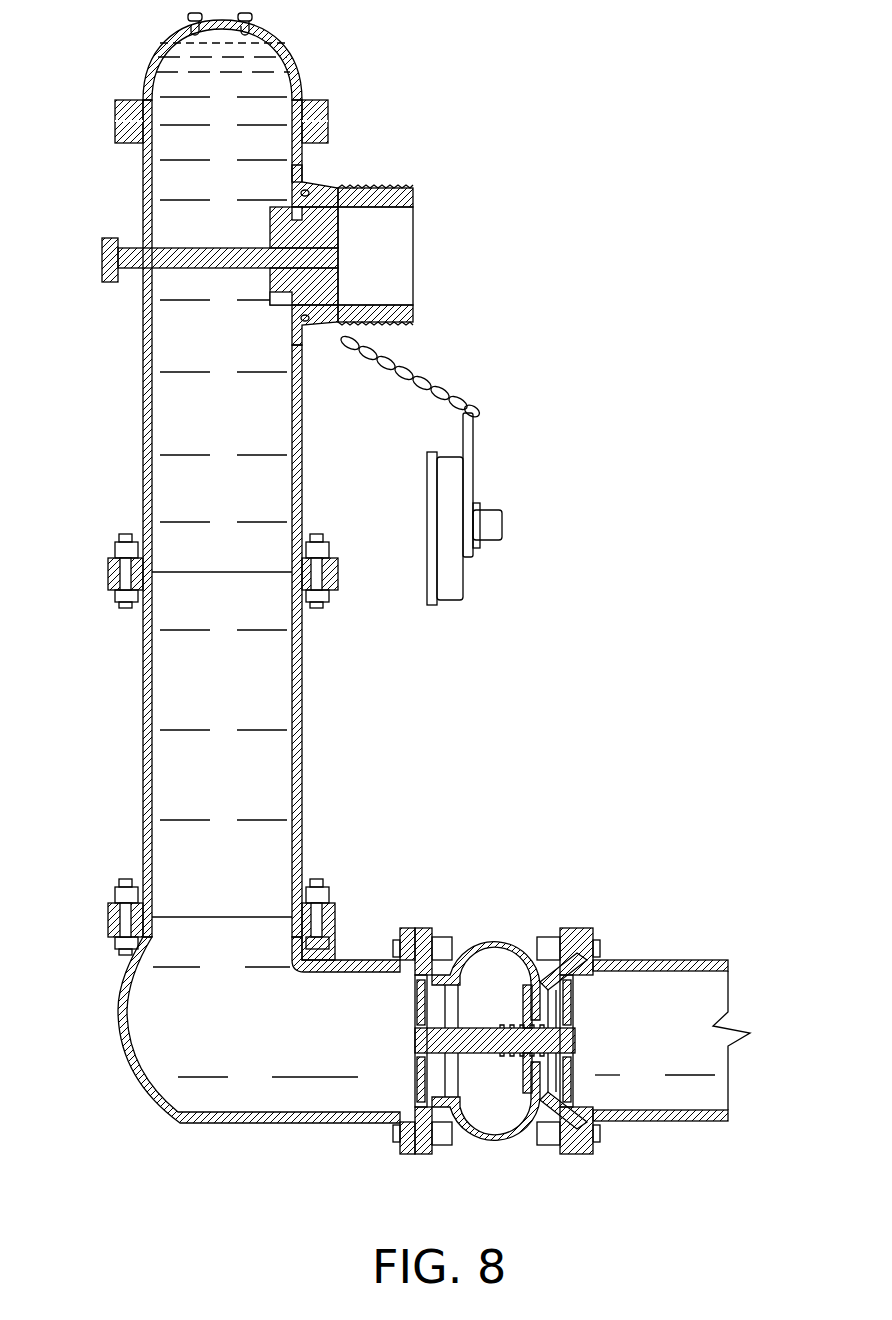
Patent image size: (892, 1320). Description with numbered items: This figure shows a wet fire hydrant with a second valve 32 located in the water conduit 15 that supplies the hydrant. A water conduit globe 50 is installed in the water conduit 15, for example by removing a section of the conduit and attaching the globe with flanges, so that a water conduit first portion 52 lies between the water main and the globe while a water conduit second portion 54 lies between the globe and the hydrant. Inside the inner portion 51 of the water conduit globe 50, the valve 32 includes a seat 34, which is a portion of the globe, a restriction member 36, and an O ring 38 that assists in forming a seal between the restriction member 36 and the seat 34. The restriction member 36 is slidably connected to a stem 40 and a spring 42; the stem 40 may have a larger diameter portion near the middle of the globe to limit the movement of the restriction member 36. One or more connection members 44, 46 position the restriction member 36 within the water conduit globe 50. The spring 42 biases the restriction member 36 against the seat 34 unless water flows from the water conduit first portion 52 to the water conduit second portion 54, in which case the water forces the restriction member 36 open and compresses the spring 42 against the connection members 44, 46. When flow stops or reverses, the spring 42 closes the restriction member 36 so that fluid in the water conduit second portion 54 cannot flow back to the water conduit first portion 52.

The water conduit 15 is at (665, 1088).
The second valve 32 is at (490, 1000).
The seat 34 is at (545, 1115).
The restriction member 36 is at (507, 975).
The O ring 38 is at (548, 975).
The stem 40 is at (485, 1045).
The spring 42 is at (512, 1057).
The connection member 44 is at (418, 1078).
The connection member 46 is at (582, 1008).
The water conduit globe 50 is at (462, 972).
The inner portion 51 is at (512, 947).
The water conduit first portion 52 is at (652, 962).
The water conduit second portion 54 is at (268, 1123).